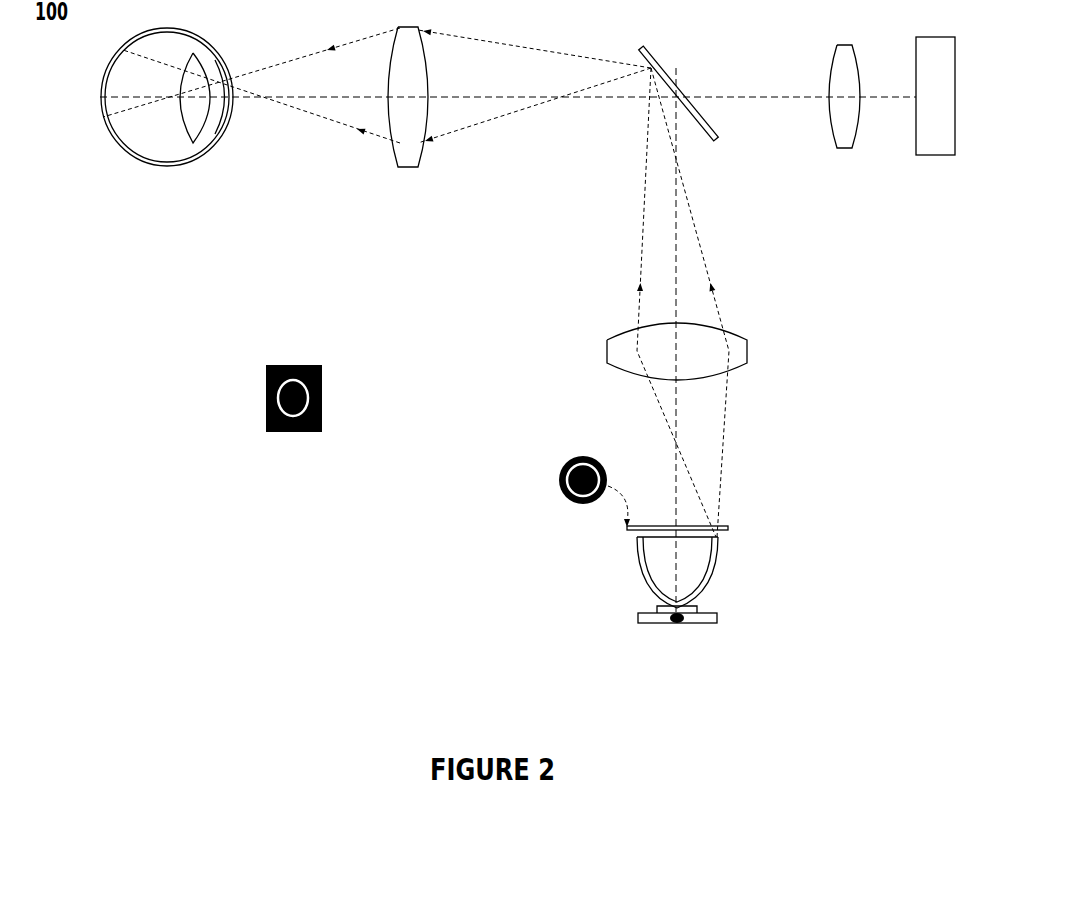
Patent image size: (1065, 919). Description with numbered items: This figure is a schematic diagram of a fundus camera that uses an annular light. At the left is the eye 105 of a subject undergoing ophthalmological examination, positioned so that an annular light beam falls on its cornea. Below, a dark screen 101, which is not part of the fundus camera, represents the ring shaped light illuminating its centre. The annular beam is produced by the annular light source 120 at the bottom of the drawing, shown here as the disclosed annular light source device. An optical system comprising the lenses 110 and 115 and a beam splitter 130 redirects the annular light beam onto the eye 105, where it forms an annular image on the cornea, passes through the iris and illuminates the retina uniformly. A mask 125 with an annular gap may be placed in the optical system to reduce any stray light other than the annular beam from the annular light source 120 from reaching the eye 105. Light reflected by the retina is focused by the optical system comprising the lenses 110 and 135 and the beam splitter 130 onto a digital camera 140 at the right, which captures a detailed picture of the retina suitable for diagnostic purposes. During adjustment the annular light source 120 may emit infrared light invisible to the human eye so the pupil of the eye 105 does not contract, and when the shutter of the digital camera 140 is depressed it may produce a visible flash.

The dark screen 101 is at (266, 380).
The eye 105 is at (210, 47).
The lens 110 is at (394, 148).
The lens 115 is at (618, 335).
The annular light source 120 is at (637, 580).
The mask 125 is at (566, 461).
The beam splitter 130 is at (645, 50).
The lens 135 is at (838, 147).
The digital camera 140 is at (938, 155).